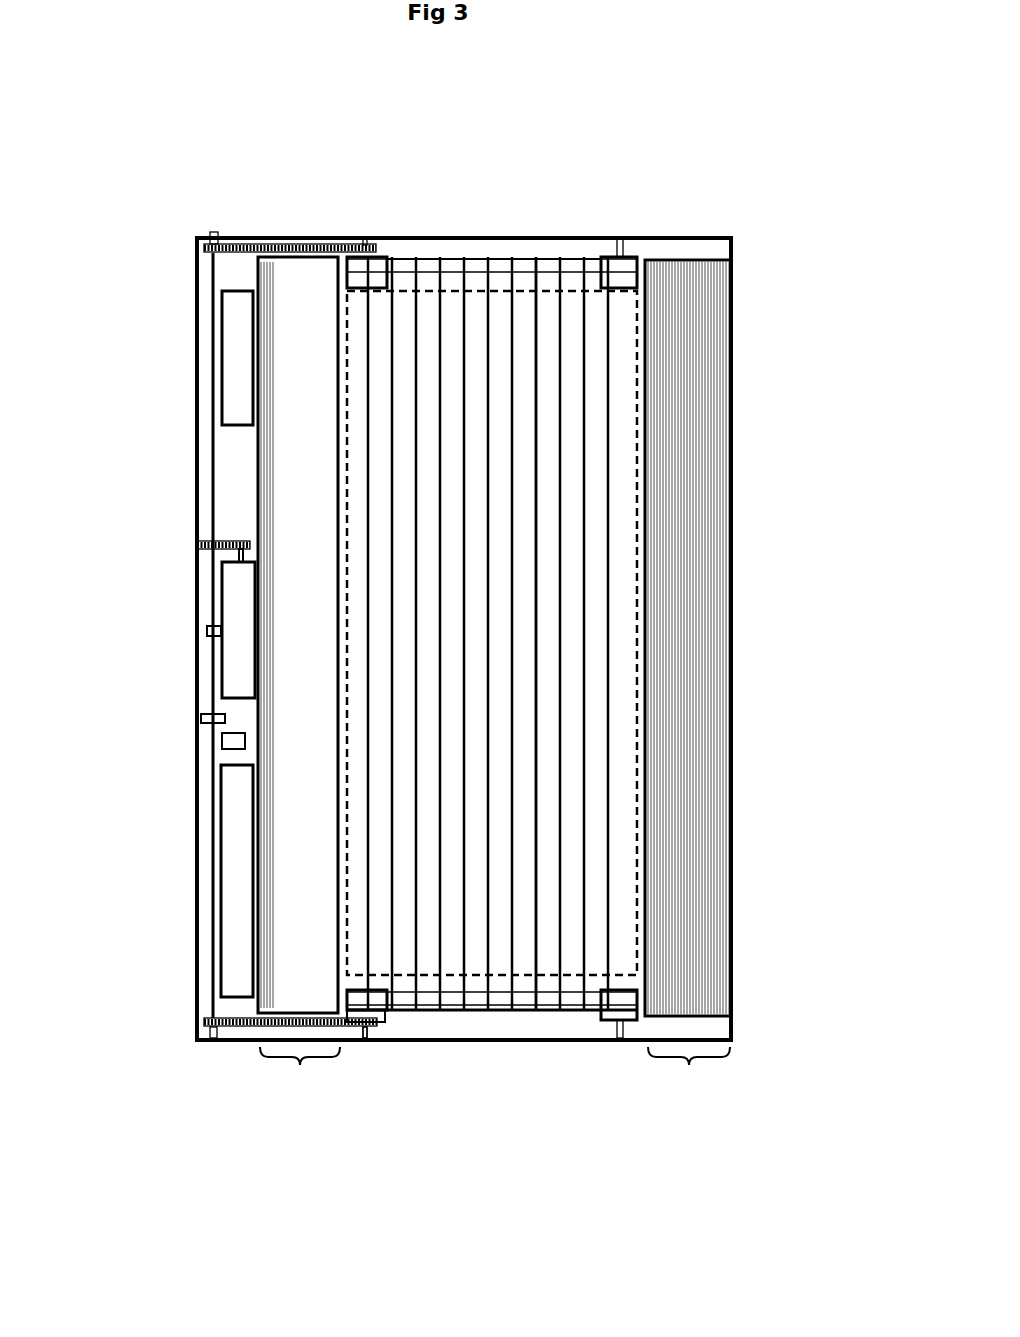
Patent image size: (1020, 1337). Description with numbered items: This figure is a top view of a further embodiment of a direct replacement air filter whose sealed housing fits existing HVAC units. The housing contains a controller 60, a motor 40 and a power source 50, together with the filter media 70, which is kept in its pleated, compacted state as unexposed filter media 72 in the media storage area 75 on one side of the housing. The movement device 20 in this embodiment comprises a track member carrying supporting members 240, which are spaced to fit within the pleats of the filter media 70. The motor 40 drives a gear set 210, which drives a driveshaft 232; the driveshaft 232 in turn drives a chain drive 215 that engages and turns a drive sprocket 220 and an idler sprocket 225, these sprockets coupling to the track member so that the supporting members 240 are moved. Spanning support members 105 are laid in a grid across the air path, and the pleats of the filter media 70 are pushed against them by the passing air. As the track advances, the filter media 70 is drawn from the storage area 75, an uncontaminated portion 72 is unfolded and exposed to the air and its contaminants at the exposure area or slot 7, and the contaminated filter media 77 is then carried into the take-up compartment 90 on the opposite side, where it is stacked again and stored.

The exposure area 7 is at (641, 603).
The movement device 20 is at (201, 555).
The motor 40 is at (232, 605).
The power source 50 is at (233, 345).
The controller 60 is at (233, 812).
The filter media 70 is at (425, 360).
The unexposed filter media 72 is at (688, 252).
The media storage area 75 is at (689, 1091).
The contaminated filter media 77 is at (302, 290).
The take-up compartment 90 is at (300, 1091).
The support members 105 is at (537, 325).
The gear set 210 is at (222, 540).
The chain drive 215 is at (225, 222).
The drive sprocket 220 is at (370, 1045).
The idler sprocket 225 is at (598, 1015).
The driveshaft 232 is at (211, 900).
The supporting members 240 is at (457, 266).